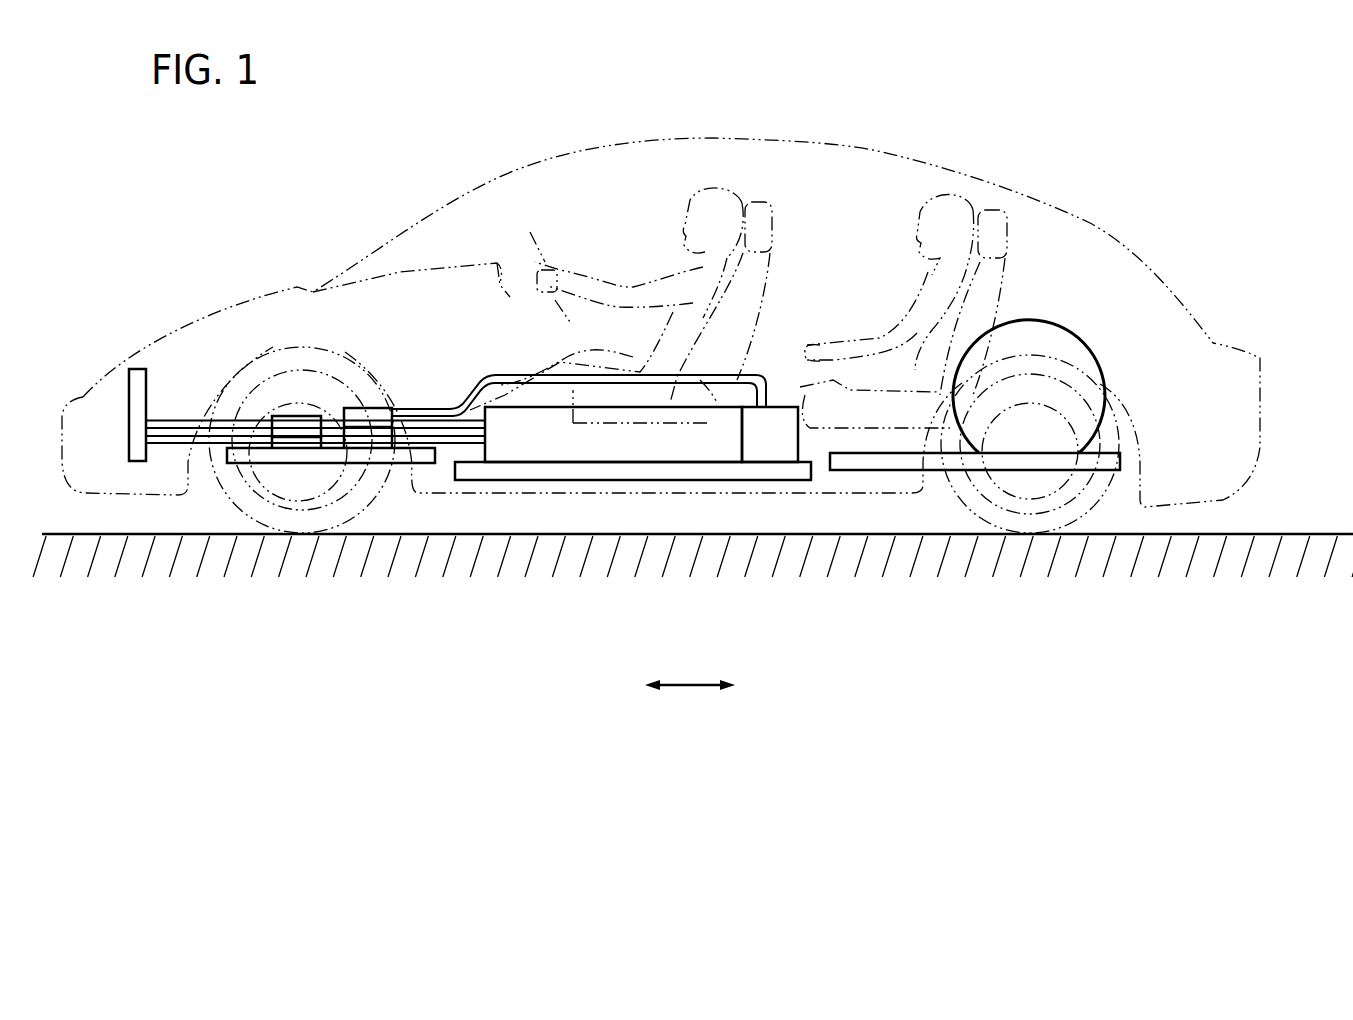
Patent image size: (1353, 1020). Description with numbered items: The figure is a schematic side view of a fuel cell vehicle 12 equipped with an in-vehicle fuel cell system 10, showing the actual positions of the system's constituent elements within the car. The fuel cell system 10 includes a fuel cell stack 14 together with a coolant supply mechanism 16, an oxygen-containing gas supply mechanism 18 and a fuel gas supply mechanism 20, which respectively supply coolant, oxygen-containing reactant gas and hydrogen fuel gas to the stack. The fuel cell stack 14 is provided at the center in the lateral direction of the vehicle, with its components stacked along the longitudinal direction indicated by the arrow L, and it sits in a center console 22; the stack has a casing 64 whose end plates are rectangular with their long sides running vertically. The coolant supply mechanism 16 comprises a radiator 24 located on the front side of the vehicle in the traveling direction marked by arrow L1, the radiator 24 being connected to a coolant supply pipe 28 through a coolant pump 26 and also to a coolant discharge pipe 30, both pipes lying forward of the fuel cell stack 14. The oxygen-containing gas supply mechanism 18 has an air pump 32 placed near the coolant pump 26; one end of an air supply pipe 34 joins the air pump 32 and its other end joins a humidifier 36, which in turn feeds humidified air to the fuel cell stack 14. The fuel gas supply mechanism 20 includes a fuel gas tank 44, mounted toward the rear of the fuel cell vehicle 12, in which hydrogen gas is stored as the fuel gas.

The fuel cell system 10 is at (578, 104).
The fuel cell vehicle 12 is at (862, 150).
The fuel cell stack 14 is at (633, 423).
The coolant supply mechanism 16 is at (285, 423).
The oxygen-containing gas supply mechanism 18 is at (478, 365).
The fuel gas supply mechanism 20 is at (1082, 398).
The center console 22 is at (544, 456).
The radiator 24 is at (128, 434).
The coolant pump 26 is at (296, 430).
The coolant supply pipe 28 is at (212, 424).
The coolant discharge pipe 30 is at (168, 444).
The air pump 32 is at (374, 418).
The air supply pipe 34 is at (620, 385).
The humidifier 36 is at (778, 412).
The fuel gas tank 44 is at (1050, 336).
The casing 64 is at (597, 437).